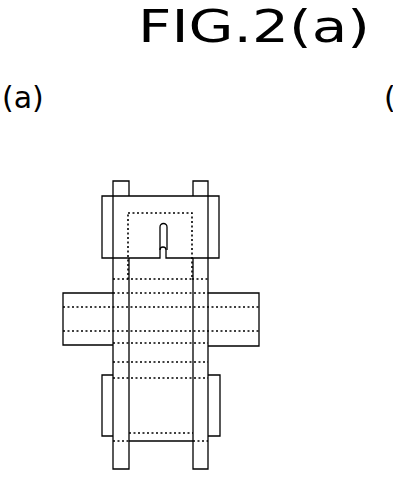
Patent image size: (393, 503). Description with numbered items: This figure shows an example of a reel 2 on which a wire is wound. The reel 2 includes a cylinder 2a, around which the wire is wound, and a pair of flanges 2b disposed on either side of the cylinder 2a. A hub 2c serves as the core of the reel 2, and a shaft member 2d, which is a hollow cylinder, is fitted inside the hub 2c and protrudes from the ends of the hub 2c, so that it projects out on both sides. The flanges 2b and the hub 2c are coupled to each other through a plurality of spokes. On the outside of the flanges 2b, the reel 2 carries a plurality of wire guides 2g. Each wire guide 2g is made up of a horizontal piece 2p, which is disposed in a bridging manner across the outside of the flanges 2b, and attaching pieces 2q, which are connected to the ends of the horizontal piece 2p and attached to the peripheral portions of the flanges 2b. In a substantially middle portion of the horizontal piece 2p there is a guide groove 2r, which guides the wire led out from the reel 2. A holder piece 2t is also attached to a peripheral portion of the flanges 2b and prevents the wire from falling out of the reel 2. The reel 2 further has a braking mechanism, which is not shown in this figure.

The reel 2 is at (225, 268).
The cylinder 2a is at (172, 403).
The flanges 2b is at (122, 452).
The hub 2c is at (183, 362).
The shaft member 2d is at (227, 293).
The wire guides 2g is at (173, 203).
The horizontal piece 2p is at (152, 202).
The attaching pieces 2q is at (108, 222).
The guide groove 2r is at (160, 233).
The holder piece 2t is at (107, 400).